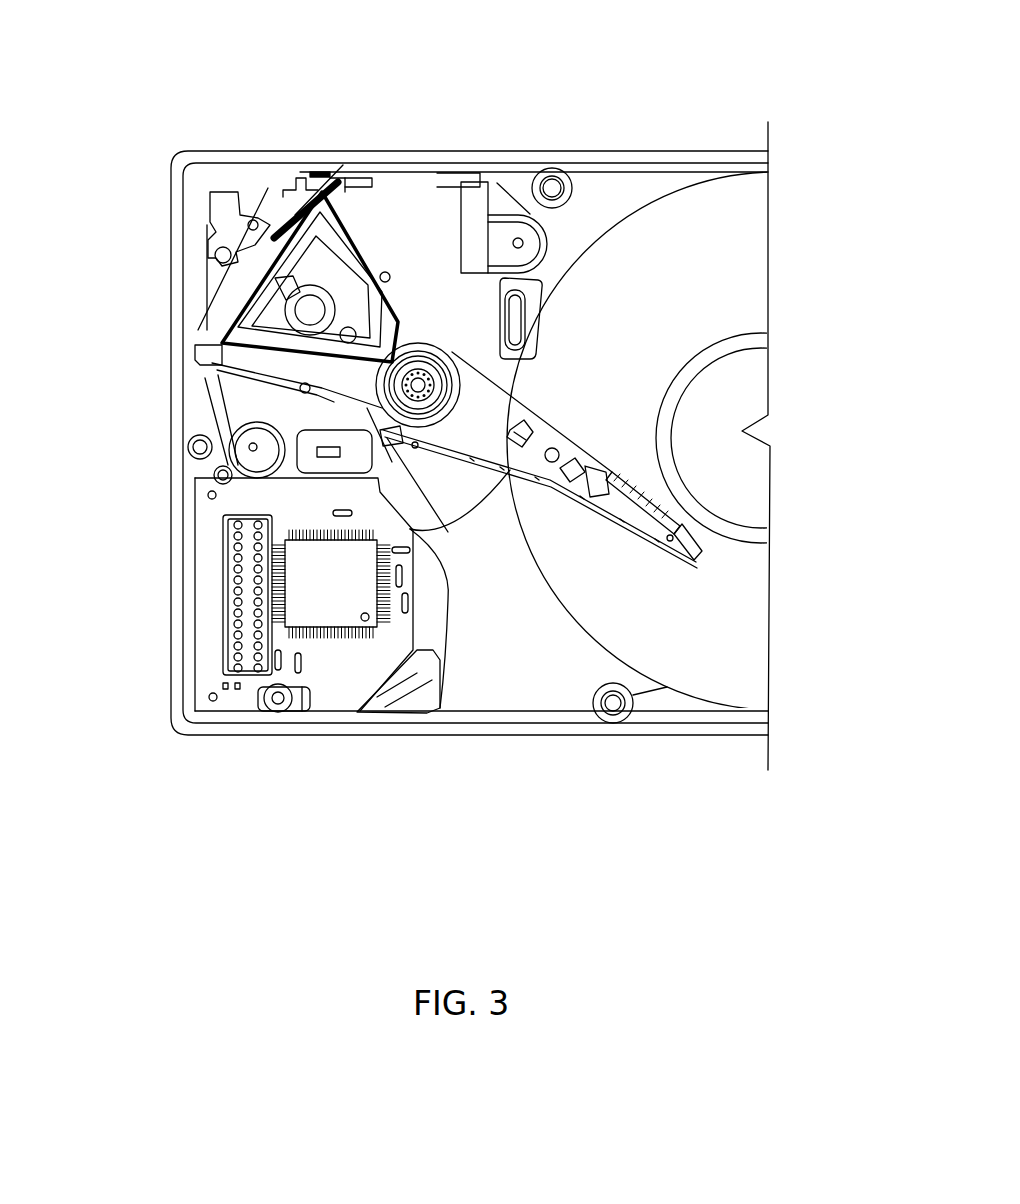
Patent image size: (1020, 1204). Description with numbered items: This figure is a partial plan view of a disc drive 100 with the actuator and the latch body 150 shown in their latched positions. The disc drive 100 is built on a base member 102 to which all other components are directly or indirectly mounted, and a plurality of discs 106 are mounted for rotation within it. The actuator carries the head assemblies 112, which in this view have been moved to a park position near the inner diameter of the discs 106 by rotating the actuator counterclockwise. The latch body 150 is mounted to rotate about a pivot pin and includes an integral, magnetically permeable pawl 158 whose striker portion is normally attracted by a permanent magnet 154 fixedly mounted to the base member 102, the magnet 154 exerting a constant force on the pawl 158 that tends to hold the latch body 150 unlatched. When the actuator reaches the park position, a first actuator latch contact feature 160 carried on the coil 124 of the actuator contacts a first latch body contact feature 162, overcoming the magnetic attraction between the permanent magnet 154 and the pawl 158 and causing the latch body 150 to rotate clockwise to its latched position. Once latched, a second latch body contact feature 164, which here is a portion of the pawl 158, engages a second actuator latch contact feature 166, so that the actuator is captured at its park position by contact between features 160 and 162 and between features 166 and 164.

The disc drive 100 is at (610, 125).
The base member 102 is at (652, 145).
The discs 106 is at (738, 247).
The head assemblies 112 is at (697, 573).
The coil 124 is at (230, 327).
The latch body 150 is at (240, 224).
The permanent magnet 154 is at (312, 173).
The pawl 158 is at (285, 188).
The first actuator latch contact feature 160 is at (322, 184).
The first latch body contact feature 162 is at (300, 196).
The second latch body contact feature 164 is at (336, 180).
The second actuator latch contact feature 166 is at (346, 178).